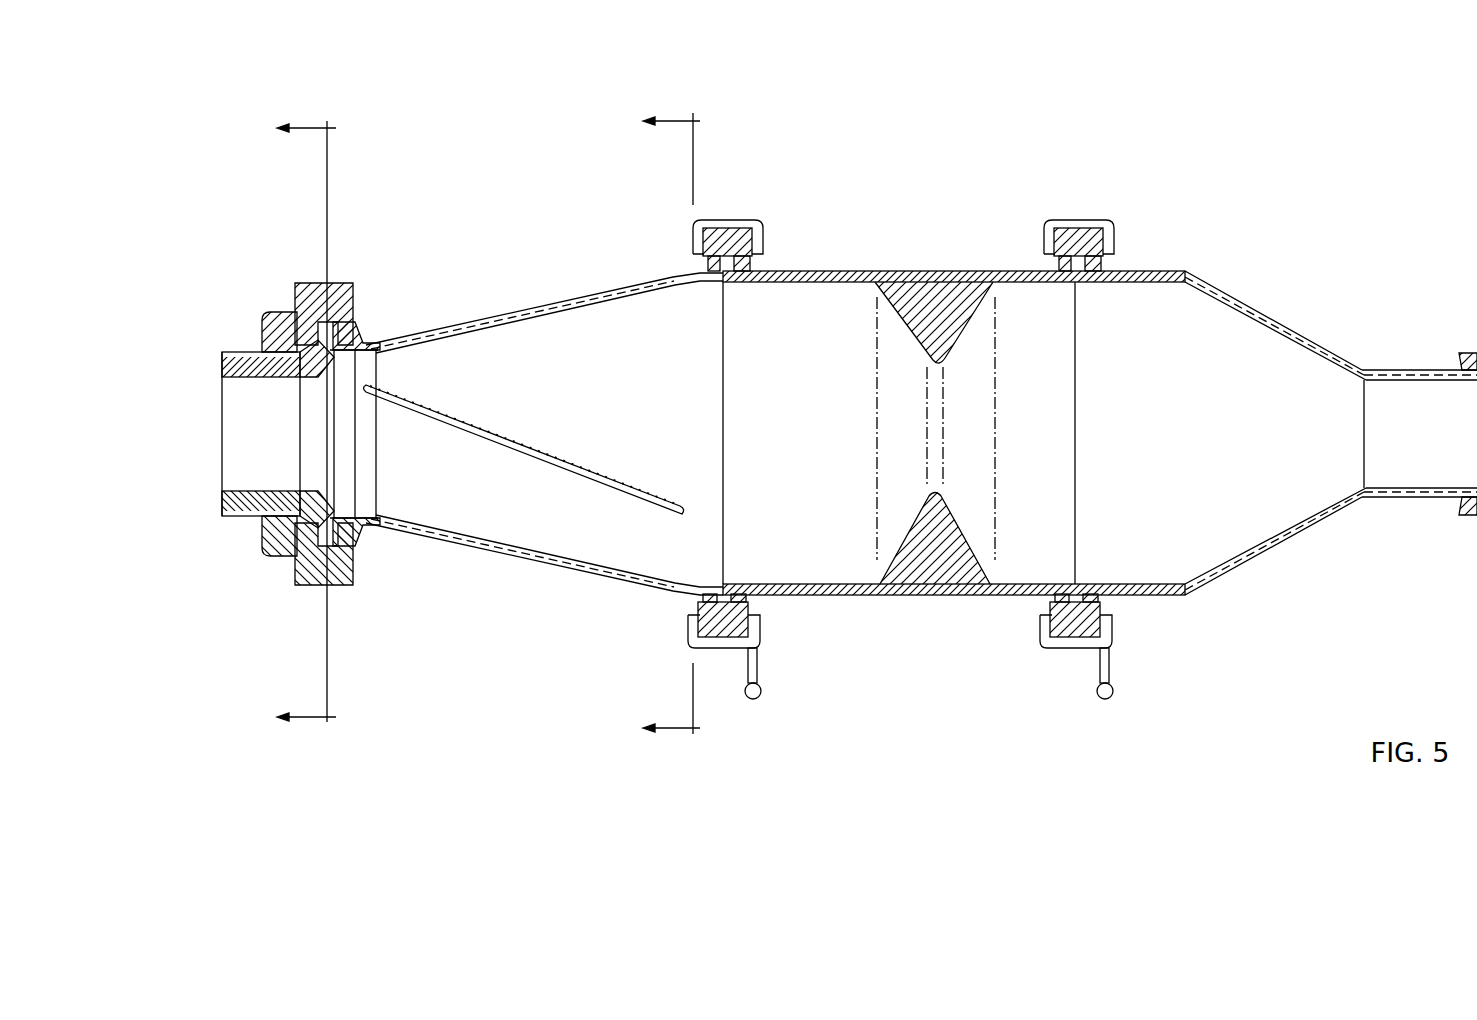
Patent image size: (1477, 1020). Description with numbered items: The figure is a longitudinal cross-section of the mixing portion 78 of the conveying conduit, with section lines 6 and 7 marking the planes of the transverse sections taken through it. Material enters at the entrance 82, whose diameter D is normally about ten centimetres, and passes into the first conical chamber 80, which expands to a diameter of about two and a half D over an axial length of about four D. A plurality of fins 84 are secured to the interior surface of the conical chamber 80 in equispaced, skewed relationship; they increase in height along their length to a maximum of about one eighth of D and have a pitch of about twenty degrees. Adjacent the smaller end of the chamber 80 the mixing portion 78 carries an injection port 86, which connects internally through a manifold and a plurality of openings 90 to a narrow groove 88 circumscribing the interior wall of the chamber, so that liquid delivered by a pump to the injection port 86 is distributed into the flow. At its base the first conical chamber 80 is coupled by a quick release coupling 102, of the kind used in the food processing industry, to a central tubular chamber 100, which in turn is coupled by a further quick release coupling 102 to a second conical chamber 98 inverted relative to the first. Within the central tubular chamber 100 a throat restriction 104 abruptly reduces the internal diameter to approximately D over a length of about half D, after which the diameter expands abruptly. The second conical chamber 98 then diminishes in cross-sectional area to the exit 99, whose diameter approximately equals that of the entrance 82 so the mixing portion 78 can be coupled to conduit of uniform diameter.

The section line 6- 6 is at (683, 426).
The section line 7- 7 is at (319, 426).
The mixing portion 78 is at (807, 392).
The first conical chamber 80 is at (606, 369).
The entrance 82 is at (262, 490).
The fins 84 is at (495, 422).
The injection port 86 is at (322, 568).
The narrow groove 88 is at (337, 510).
The openings 90 is at (365, 345).
The second conical chamber 98 is at (1283, 323).
The exit 99 is at (1425, 368).
The central tubular chamber 100 is at (820, 272).
The quick release coupling 102 is at (762, 628).
The throat restriction 104 is at (945, 492).